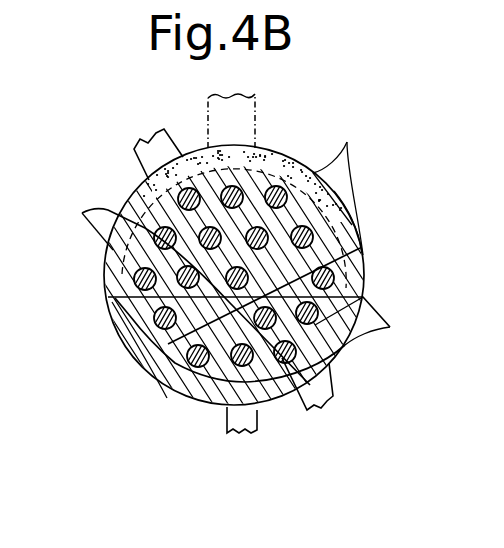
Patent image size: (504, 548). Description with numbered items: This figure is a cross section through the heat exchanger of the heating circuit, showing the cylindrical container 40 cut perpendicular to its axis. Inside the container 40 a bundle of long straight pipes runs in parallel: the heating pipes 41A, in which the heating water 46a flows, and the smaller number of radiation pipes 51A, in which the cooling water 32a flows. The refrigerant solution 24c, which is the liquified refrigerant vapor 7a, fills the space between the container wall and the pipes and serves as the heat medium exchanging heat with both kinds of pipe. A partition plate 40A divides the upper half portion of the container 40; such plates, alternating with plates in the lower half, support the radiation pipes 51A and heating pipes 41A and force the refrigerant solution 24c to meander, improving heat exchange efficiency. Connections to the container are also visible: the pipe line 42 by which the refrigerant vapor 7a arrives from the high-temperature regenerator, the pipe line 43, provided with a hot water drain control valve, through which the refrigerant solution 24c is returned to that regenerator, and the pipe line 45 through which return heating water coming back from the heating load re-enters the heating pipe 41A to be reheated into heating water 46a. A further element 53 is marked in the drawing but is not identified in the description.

The cylindrical container 40 is at (350, 212).
The partition plate 40A is at (348, 240).
The refrigerant vapor 7a is at (260, 161).
The pipe line 42 is at (204, 110).
The pipe line 45 is at (134, 152).
The heating water 46a is at (348, 145).
The heating pipe 41A is at (82, 213).
The radiation pipe 51A is at (390, 327).
The refrigerant solution 24c is at (112, 312).
The cooling water 32a is at (180, 391).
The lower tab 53 is at (335, 380).
The pipe line 43 is at (260, 415).